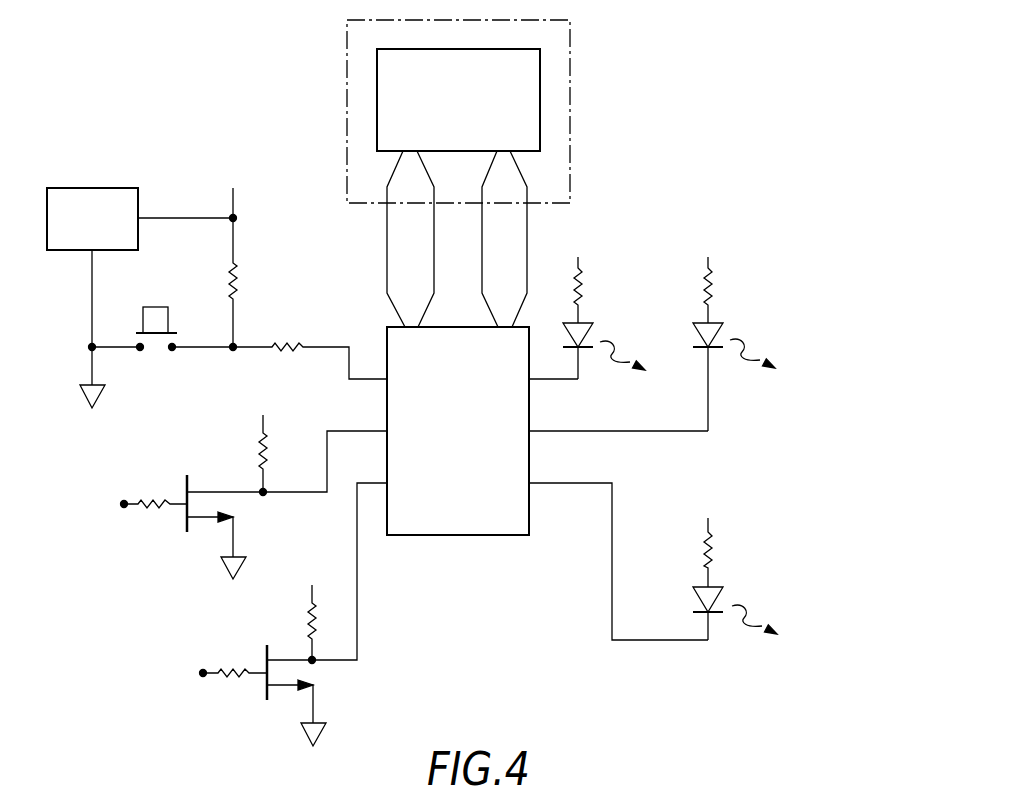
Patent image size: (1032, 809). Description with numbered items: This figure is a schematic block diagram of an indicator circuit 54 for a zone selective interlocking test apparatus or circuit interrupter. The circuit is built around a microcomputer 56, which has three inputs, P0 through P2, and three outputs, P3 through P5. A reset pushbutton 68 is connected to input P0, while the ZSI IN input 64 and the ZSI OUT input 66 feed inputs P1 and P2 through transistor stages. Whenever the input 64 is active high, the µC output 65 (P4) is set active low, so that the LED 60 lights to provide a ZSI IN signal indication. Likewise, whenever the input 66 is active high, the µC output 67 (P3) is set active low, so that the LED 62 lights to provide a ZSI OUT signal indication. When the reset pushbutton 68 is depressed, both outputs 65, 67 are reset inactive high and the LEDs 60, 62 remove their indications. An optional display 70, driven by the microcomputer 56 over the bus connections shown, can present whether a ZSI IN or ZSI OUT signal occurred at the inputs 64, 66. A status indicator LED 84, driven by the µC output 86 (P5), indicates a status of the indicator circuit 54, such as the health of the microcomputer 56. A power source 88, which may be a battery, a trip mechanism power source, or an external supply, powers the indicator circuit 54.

The indicator circuit 54 is at (512, 638).
The microcomputer (µC) 56 is at (445, 537).
The LED 60 is at (720, 323).
The LED 62 is at (718, 588).
The input (ZSI IN) 64 is at (124, 500).
The µC output (P4) 65 is at (529, 435).
The input (ZSI OUT) 66 is at (203, 670).
The µC output (P3) 67 is at (529, 487).
The reset pushbutton 68 is at (152, 307).
The display 70 is at (376, 70).
The status indicator light (LED) 84 is at (590, 323).
The µC output (P5) 86 is at (529, 382).
The power source 88 is at (83, 188).